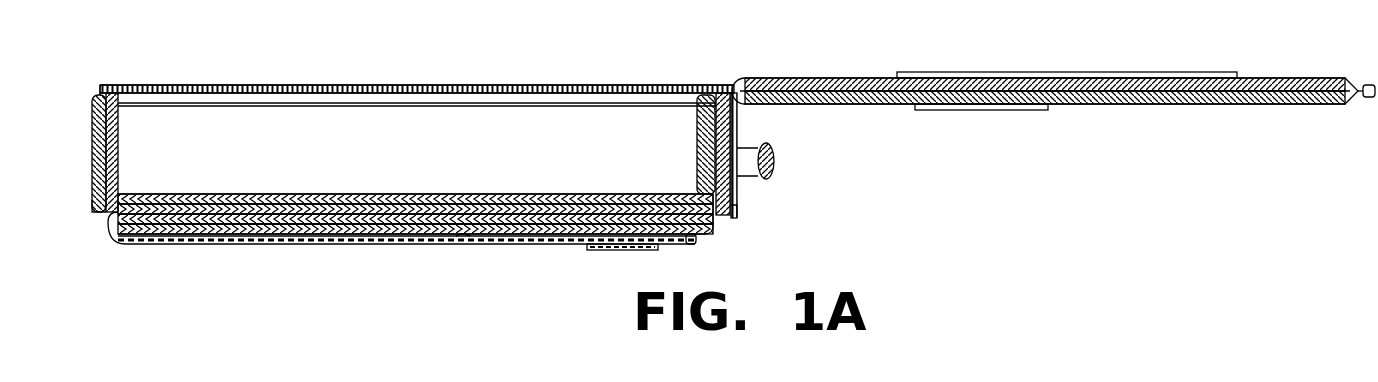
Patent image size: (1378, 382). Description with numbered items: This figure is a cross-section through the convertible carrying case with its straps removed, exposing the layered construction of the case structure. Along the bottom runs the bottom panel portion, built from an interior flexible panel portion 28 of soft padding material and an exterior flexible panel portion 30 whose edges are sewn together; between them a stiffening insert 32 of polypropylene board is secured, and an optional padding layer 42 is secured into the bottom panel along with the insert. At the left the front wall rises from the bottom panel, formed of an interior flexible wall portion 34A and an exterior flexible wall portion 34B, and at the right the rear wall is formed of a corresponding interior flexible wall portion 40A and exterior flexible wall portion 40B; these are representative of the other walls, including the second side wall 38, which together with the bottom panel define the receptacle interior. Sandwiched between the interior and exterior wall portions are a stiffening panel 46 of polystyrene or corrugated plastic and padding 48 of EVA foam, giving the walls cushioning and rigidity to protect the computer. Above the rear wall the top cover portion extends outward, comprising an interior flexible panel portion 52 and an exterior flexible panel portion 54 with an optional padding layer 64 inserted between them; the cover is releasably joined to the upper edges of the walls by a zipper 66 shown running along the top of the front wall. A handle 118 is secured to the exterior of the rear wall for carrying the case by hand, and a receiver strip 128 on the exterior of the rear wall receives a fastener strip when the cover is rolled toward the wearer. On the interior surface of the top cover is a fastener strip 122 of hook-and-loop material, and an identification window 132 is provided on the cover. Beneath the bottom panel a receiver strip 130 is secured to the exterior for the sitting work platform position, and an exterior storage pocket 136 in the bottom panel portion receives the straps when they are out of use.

The interior flexible panel portion 28 is at (300, 194).
The exterior flexible panel portion 30 is at (240, 223).
The stiffening insert 32 is at (266, 208).
The interior flexible wall portion 34A is at (118, 133).
The exterior flexible wall portion 34B is at (95, 132).
The second side wall 38 is at (473, 163).
The interior flexible wall portion 40A is at (698, 135).
The exterior flexible wall portion 40B is at (723, 220).
The padding layer 42 is at (193, 218).
The stiffening panel 46 is at (118, 179).
The padding 48 is at (95, 176).
The interior flexible panel portion 52 is at (830, 90).
The exterior flexible panel portion 54 is at (848, 97).
The padding layer 64 is at (1105, 92).
The zipper 66 is at (157, 97).
The handle 118 is at (775, 163).
The fastener strip 122 is at (1043, 75).
The receiver strip 128 is at (731, 217).
The receiver strip 130 is at (602, 250).
The identification window 132 is at (993, 111).
The exterior storage pocket 136 is at (462, 238).